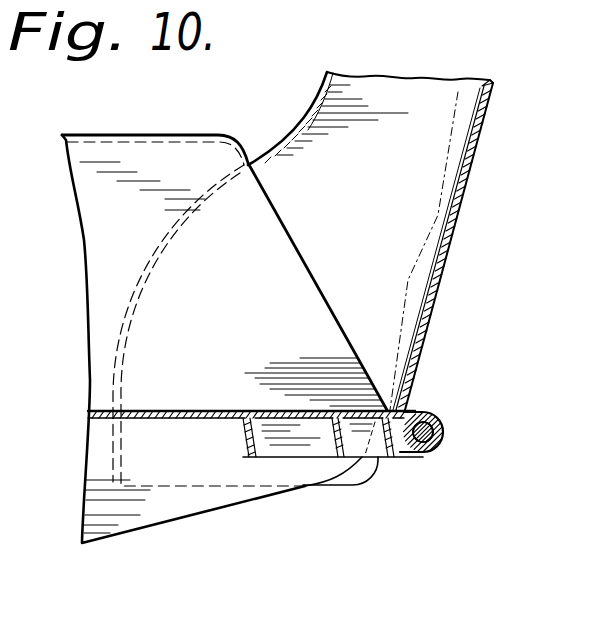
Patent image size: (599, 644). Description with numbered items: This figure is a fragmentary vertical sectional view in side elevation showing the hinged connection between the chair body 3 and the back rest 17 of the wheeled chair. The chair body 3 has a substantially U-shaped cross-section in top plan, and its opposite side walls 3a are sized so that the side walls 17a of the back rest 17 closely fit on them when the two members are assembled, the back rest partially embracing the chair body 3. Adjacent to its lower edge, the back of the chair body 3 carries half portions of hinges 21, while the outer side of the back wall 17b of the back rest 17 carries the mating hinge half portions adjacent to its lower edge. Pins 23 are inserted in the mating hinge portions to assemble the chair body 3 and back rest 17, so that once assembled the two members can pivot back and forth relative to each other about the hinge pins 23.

The chair body 3 is at (147, 411).
The side walls of the chair body 3a is at (200, 155).
The back rest 17 is at (468, 185).
The side walls of the back rest 17a is at (392, 328).
The back wall of the back rest 17b is at (450, 250).
The half portions of hinges 21 is at (443, 432).
The pins 23 is at (423, 453).